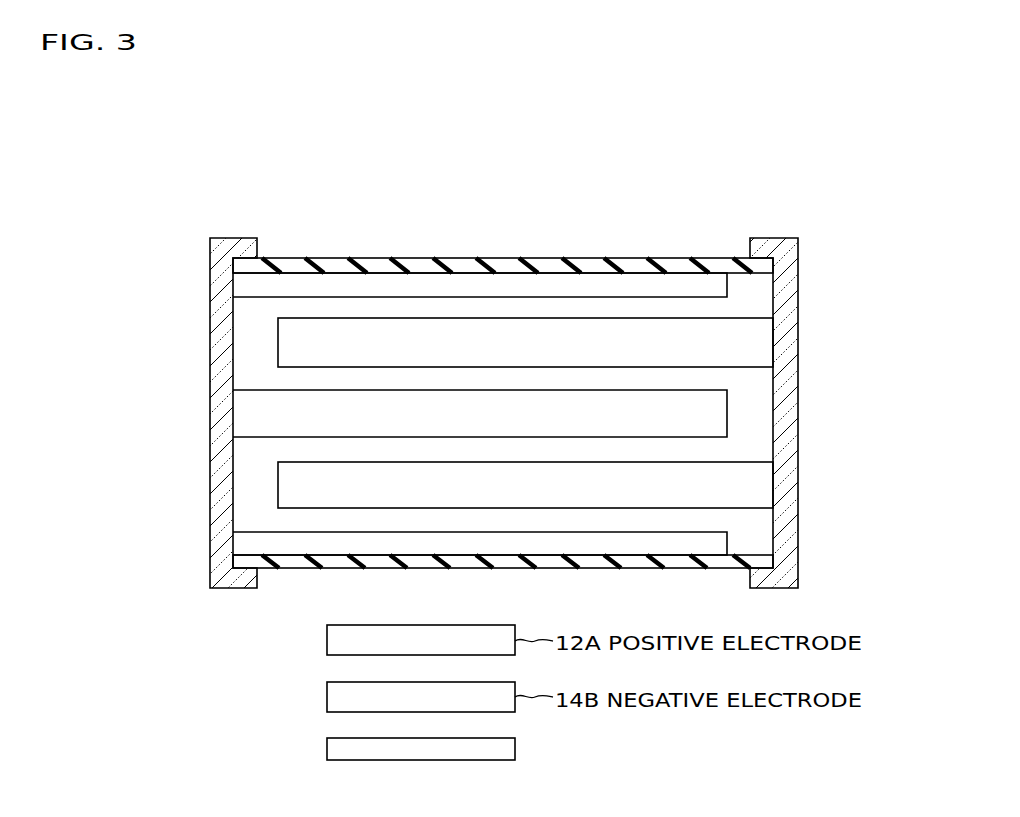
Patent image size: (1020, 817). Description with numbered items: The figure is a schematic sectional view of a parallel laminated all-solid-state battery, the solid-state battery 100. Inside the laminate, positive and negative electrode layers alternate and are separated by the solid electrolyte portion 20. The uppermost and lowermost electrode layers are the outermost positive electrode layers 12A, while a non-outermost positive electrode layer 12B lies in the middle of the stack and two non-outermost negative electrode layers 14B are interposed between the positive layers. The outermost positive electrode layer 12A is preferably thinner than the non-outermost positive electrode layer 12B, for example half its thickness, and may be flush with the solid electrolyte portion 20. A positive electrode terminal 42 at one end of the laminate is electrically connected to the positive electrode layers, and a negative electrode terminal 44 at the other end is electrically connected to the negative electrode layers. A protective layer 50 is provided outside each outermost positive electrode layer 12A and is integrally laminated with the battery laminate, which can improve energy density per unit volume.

The solid-state battery 100 is at (678, 165).
The outermost positive electrode layer 12A is at (302, 285).
The non-outermost positive electrode layer 12B is at (250, 410).
The non-outermost negative electrode layer 14B is at (762, 342).
The solid electrolyte portion 20 is at (515, 748).
The positive electrode terminal 42 is at (218, 508).
The negative electrode terminal 44 is at (790, 527).
The protective layer 50 is at (505, 265).